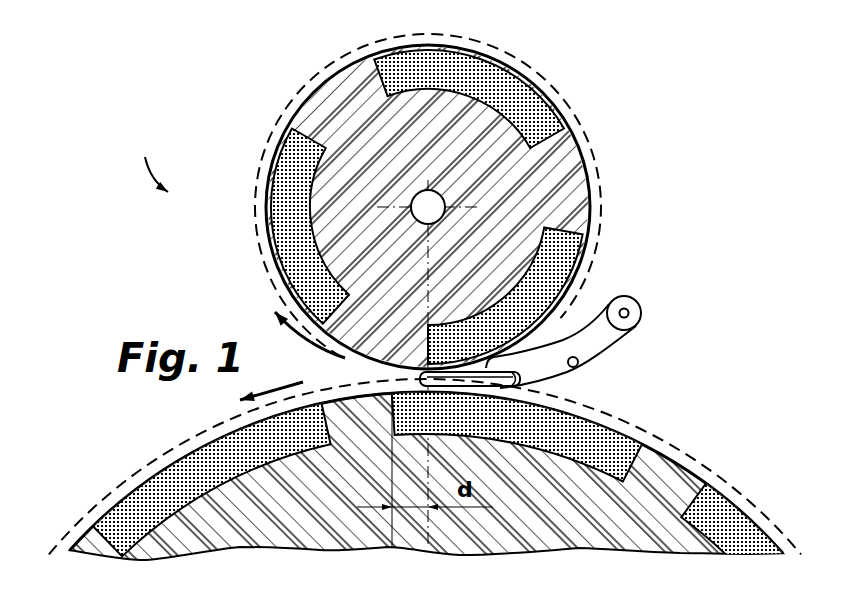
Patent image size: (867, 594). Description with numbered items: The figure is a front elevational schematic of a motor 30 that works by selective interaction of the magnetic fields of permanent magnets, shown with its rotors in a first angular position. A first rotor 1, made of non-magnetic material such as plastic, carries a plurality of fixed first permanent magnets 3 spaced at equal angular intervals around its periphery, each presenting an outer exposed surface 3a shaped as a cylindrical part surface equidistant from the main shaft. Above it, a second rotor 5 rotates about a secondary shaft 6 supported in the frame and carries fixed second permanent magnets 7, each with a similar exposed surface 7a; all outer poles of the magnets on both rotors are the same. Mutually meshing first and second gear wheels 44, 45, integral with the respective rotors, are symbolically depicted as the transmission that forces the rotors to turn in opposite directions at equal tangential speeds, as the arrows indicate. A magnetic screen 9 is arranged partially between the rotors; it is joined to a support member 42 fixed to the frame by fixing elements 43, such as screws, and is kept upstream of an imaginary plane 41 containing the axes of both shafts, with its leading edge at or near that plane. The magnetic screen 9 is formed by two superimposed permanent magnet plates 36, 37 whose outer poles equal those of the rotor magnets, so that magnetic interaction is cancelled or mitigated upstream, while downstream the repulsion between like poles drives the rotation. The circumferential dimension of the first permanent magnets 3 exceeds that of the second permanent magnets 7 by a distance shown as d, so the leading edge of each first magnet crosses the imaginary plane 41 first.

The first rotor 1 is at (663, 468).
The first permanent magnets 3 is at (153, 490).
The exposed surface 3a is at (222, 437).
The second rotor 5 is at (596, 173).
The secondary shaft 6 is at (411, 193).
The second permanent magnets 7 is at (273, 188).
The exposed surface 7a is at (266, 200).
The magnetic screen 9 is at (417, 377).
The motor 30 is at (149, 160).
The permanent magnet plate 36 is at (500, 388).
The permanent magnet plate 37 is at (496, 360).
The imaginary plane 41 is at (427, 278).
The support member 42 is at (614, 340).
The fixing elements 43 is at (638, 305).
The first gear wheel 44 is at (103, 502).
The second gear wheel 45 is at (284, 110).